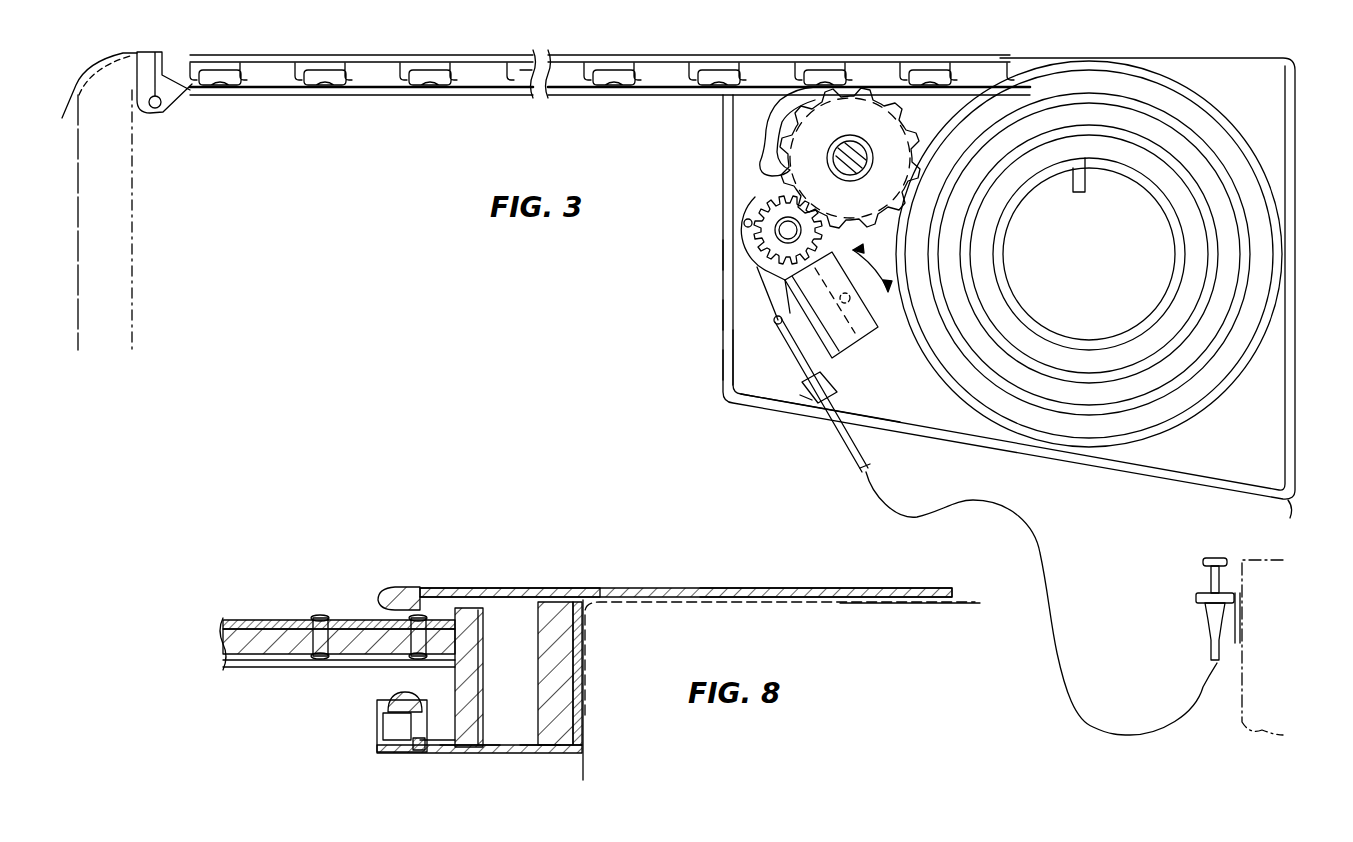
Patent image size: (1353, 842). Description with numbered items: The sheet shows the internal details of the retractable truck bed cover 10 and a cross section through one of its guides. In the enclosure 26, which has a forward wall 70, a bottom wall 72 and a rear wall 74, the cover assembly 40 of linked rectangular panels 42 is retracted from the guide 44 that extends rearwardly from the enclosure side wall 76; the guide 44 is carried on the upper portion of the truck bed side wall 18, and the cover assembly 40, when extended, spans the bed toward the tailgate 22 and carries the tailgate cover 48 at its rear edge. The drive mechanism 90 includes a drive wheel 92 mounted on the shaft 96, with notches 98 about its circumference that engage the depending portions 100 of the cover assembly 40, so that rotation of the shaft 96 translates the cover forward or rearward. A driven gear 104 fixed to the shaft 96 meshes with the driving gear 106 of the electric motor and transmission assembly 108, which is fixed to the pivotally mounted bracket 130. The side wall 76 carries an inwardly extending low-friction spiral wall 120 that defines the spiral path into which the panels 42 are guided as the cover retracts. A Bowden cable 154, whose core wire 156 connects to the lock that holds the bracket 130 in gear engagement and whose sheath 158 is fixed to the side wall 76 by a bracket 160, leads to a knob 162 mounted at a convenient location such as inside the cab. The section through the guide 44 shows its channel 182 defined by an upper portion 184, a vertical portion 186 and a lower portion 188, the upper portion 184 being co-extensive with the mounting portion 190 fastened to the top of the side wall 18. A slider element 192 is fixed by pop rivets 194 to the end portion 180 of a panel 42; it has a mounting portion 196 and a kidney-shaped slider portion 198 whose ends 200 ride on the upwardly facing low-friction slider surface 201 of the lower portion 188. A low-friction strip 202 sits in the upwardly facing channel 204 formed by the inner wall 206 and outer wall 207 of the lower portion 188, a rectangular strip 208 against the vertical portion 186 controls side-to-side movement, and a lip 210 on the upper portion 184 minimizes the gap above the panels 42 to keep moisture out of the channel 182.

In FIG. 3, the cover 10 is at (652, 344).
In FIG. 8, the side wall 18 is at (870, 605).
In FIG. 3, the tailgate 22 is at (134, 268).
In FIG. 3, the enclosure 26 is at (722, 313).
In FIG. 3, the cover assembly 40 is at (410, 55).
In FIG. 3, the panels 42 is at (330, 53).
In FIG. 8, the panels 42 is at (232, 620).
In FIG. 3, the guide 44 is at (508, 55).
In FIG. 8, the guide 44 is at (708, 588).
In FIG. 3, the tailgate cover 48 is at (86, 78).
In FIG. 3, the forward wall 70 is at (1022, 293).
In FIG. 3, the bottom wall 72 is at (1132, 480).
In FIG. 3, the rear wall 74 is at (722, 256).
In FIG. 3, the side wall 76 is at (946, 415).
In FIG. 3, the drive mechanism 90 is at (750, 340).
In FIG. 3, the drive wheel 92 is at (905, 126).
In FIG. 3, the shaft 96 is at (840, 174).
In FIG. 3, the notches 98 is at (766, 128).
In FIG. 3, the depending portions 100 is at (640, 88).
In FIG. 3, the driven gear 104 is at (858, 95).
In FIG. 3, the driving gear 106 is at (770, 186).
In FIG. 3, the electric motor and transmission assembly 108 is at (855, 338).
In FIG. 3, the spiral wall 120 is at (1185, 150).
In FIG. 3, the bracket 130 is at (778, 322).
In FIG. 3, the Bowden cable 154 is at (845, 462).
In FIG. 3, the core wire 156 is at (808, 408).
In FIG. 3, the sheath 158 is at (868, 467).
In FIG. 3, the bracket 160 is at (838, 383).
In FIG. 3, the knob 162 is at (1213, 556).
In FIG. 8, the end portions 180 is at (462, 608).
In FIG. 8, the channel 182 is at (526, 670).
In FIG. 8, the upper portion 184 is at (550, 588).
In FIG. 8, the vertical portion 186 is at (582, 668).
In FIG. 8, the lower portion 188 is at (512, 755).
In FIG. 8, the mounting portion 190 is at (812, 588).
In FIG. 8, the slider element 192 is at (458, 692).
In FIG. 8, the pop rivets 194 is at (318, 614).
In FIG. 8, the mounting portion 196 is at (268, 665).
In FIG. 8, the slider portion 198 is at (445, 755).
In FIG. 8, the ends 200 is at (490, 755).
In FIG. 8, the slider surface 201 is at (528, 755).
In FIG. 8, the strip 202 is at (390, 697).
In FIG. 8, the channel 204 is at (378, 745).
In FIG. 8, the inner wall 206 is at (383, 721).
In FIG. 8, the outer wall 207 is at (418, 752).
In FIG. 8, the strip 208 is at (586, 738).
In FIG. 8, the lip 210 is at (380, 588).